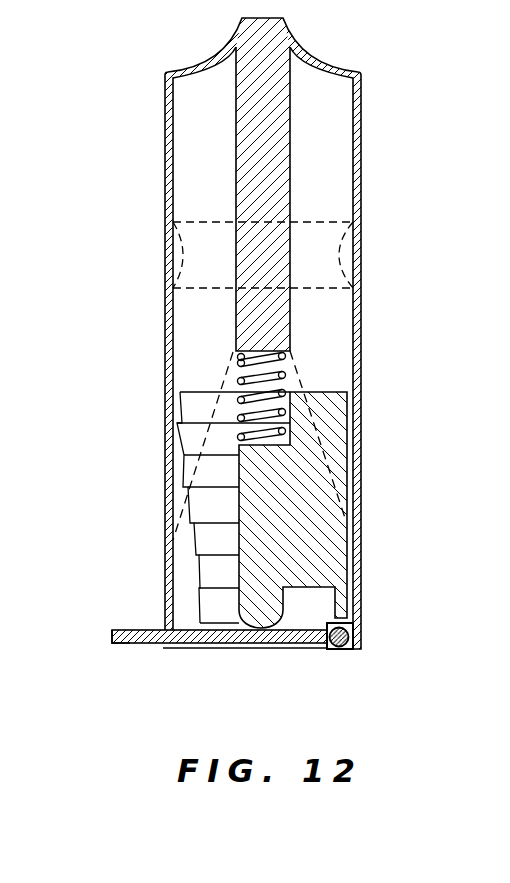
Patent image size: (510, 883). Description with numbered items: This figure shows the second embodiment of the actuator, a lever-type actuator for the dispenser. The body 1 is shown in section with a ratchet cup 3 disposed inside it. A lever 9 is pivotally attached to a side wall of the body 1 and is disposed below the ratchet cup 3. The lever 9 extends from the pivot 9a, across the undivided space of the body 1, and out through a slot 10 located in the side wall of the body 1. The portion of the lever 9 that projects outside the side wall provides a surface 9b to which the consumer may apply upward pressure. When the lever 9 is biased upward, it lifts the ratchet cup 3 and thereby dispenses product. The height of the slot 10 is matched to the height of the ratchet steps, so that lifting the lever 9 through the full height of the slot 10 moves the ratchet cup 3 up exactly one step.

The housing 1 is at (378, 450).
The slider block 3 is at (302, 589).
The lever 9 is at (218, 648).
The pivot 9a is at (355, 639).
The surface 9b is at (131, 645).
The slot 10 is at (163, 647).